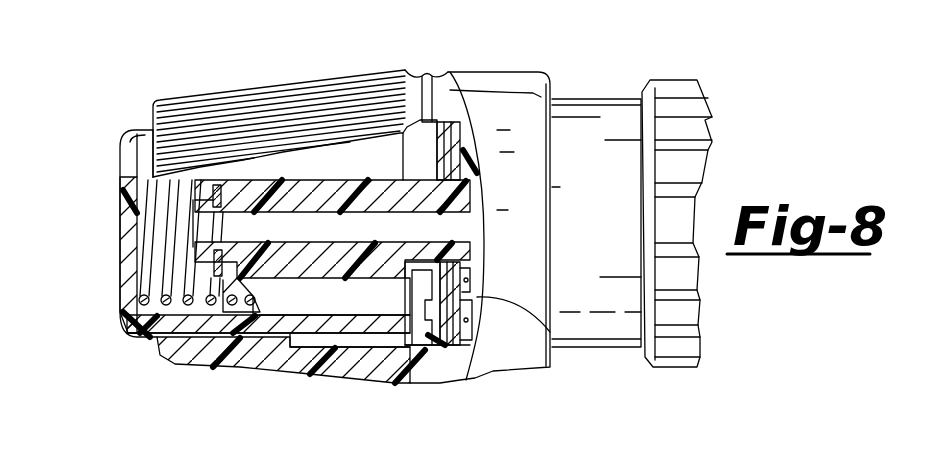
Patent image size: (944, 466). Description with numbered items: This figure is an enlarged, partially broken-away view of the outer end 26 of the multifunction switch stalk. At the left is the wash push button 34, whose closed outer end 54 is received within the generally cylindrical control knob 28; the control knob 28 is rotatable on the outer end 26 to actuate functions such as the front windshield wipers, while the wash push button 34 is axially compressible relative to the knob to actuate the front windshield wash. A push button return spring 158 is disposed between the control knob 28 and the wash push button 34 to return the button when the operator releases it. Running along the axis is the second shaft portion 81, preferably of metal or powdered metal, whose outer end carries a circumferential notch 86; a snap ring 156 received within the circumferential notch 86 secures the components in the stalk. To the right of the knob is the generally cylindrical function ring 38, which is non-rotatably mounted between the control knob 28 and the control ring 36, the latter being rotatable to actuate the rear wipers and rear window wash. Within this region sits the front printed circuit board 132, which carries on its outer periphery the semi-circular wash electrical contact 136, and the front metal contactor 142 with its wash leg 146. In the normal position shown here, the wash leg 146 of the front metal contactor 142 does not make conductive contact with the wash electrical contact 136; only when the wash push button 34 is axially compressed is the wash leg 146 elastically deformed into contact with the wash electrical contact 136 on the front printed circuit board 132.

The outer end 26 is at (120, 143).
The wash push button 34 is at (128, 120).
The closed outer end 54 is at (120, 237).
The circumferential notch 86 is at (213, 190).
The snap ring 156 is at (222, 160).
The second shaft portion 81 is at (362, 180).
The control knob 28 is at (430, 68).
The front metal contactor 142 is at (443, 167).
The front printed circuit board 132 is at (560, 353).
The function ring 38 is at (572, 88).
The control ring 36 is at (673, 72).
The push button return spring 158 is at (310, 350).
The wash leg 146 is at (427, 365).
The wash electrical contact 136 is at (455, 300).